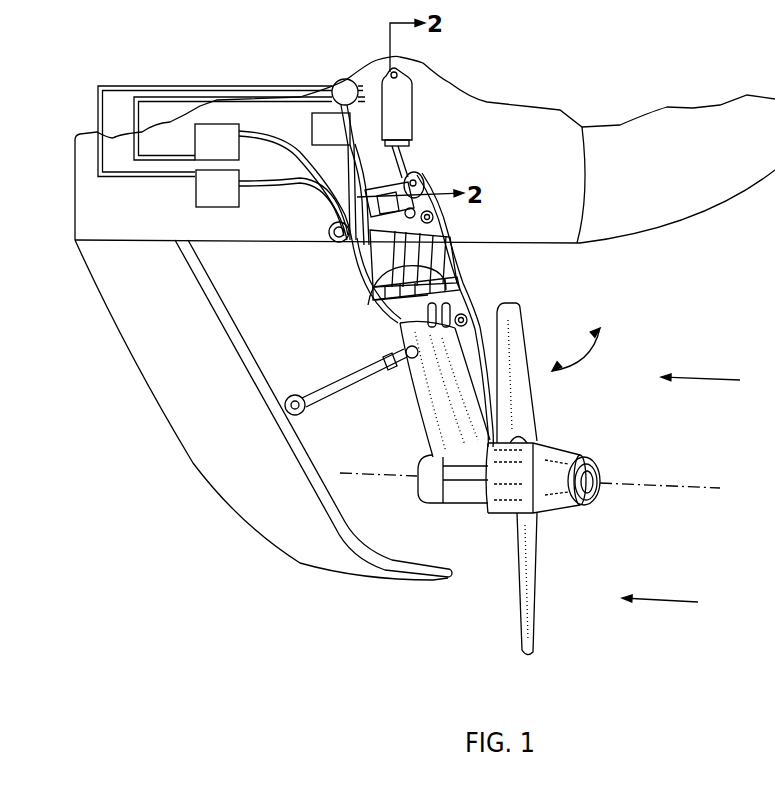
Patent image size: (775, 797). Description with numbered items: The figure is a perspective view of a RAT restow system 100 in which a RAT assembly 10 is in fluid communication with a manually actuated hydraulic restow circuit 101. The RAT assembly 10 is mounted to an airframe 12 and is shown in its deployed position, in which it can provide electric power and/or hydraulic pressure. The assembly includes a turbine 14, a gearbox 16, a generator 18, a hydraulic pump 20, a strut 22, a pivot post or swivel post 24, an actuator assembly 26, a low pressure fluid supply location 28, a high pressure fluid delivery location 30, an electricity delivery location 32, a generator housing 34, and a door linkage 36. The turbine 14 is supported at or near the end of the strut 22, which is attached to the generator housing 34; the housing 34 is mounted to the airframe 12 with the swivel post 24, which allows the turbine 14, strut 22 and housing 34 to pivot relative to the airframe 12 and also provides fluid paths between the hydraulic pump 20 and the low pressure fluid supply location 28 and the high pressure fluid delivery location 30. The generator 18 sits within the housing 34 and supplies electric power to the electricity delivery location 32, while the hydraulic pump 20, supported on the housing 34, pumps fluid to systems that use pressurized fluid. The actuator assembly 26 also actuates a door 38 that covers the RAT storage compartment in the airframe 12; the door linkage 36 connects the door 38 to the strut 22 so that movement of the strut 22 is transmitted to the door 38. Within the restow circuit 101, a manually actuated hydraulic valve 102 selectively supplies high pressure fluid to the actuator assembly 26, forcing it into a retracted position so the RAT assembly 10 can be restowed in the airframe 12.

The RAT restow system 100 is at (293, 49).
The manually actuated hydraulic restow circuit 101 is at (123, 78).
The manually actuated hydraulic valve 102 is at (342, 79).
The RAT assembly 10 is at (564, 307).
The airframe 12 is at (563, 190).
The turbine 14 is at (497, 493).
The gearbox 16 is at (460, 490).
The generator 18 is at (344, 285).
The hydraulic pump 20 is at (383, 184).
The strut 22 is at (414, 400).
The pivot post 24 is at (318, 222).
The actuator assembly 26 is at (402, 108).
The low pressure fluid supply location 28 is at (196, 184).
The high pressure fluid delivery location 30 is at (195, 143).
The electricity delivery location 32 is at (312, 126).
The generator housing 34 is at (460, 254).
The door linkage 36 is at (336, 378).
The door 38 is at (433, 584).